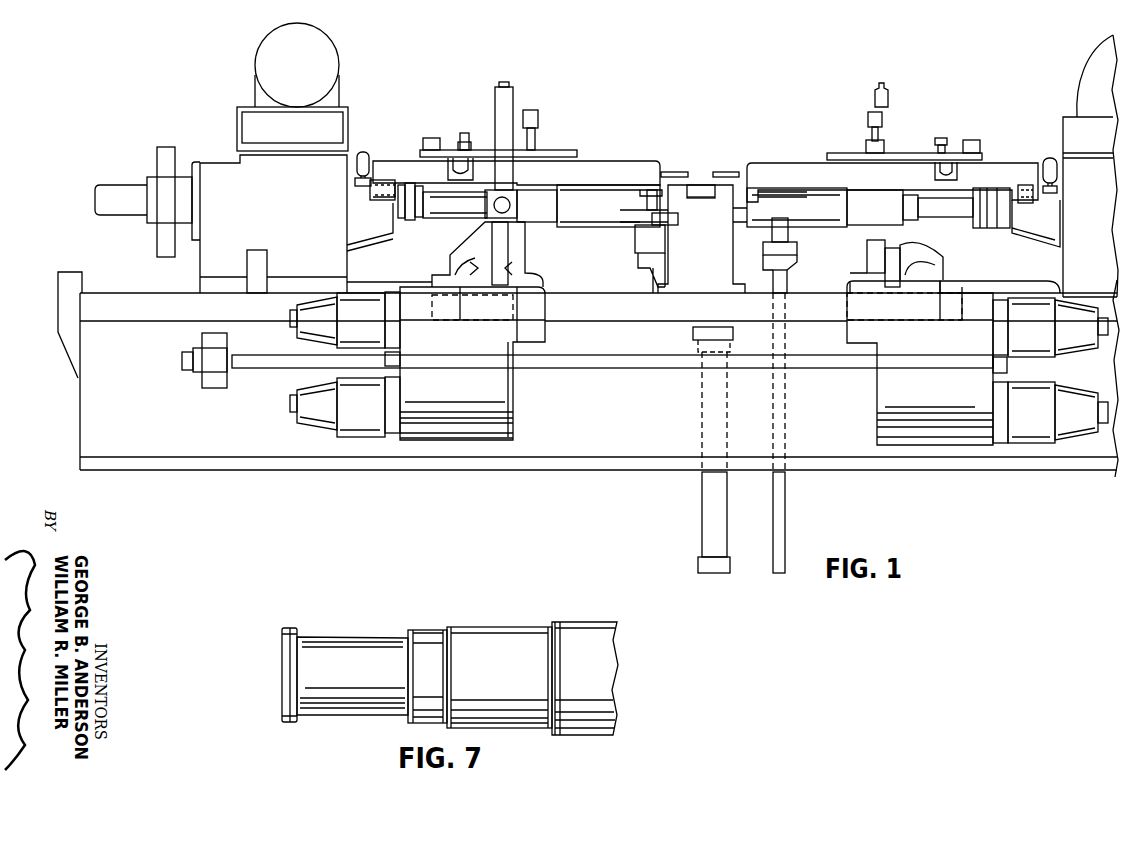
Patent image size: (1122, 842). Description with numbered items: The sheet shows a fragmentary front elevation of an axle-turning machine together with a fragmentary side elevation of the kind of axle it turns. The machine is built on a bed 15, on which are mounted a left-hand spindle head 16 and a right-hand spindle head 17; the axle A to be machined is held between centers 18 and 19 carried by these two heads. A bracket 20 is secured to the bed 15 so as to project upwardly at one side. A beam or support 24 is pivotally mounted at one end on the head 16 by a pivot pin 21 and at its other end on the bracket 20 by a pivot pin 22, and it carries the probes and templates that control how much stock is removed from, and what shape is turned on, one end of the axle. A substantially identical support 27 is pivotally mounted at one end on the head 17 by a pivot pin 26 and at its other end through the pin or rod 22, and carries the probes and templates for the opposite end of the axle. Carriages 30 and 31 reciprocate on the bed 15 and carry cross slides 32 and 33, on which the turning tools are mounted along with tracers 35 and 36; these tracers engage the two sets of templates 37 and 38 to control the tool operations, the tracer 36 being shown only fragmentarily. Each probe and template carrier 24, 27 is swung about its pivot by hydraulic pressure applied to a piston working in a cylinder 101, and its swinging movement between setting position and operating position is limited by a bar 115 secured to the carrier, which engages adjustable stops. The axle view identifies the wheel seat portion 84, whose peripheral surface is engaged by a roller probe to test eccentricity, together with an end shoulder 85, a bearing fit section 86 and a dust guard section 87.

In FIG. 1, the bed 15 is at (873, 465).
In FIG. 1, the left-hand spindle head 16 is at (220, 165).
In FIG. 1, the right-hand spindle head 17 is at (1097, 205).
In FIG. 1, the center 18 is at (432, 218).
In FIG. 1, the center 19 is at (976, 218).
In FIG. 1, the bracket 20 is at (710, 263).
In FIG. 1, the pivot pin 21 is at (387, 195).
In FIG. 1, the pivot pin 22 is at (702, 199).
In FIG. 1, the beam or support 24 is at (615, 168).
In FIG. 1, the pivot pin 26 is at (1022, 204).
In FIG. 1, the support 27 is at (1000, 165).
In FIG. 1, the carriage 30 is at (507, 406).
In FIG. 1, the carriage 31 is at (883, 393).
In FIG. 1, the cross slide 32 is at (520, 254).
In FIG. 1, the cross slide 33 is at (868, 253).
In FIG. 1, the tracer 35 is at (495, 130).
In FIG. 1, the tracer 36 is at (875, 95).
In FIG. 1, the templates 37 is at (545, 142).
In FIG. 1, the templates 38 is at (927, 152).
In FIG. 1, the cylinder 101 is at (362, 157).
In FIG. 1, the bar 115 is at (722, 171).
In FIG. 1, the axle A is at (589, 220).
In FIG. 7, the axle A is at (572, 625).
In FIG. 7, the wheel seat portion 84 is at (492, 628).
In FIG. 7, the end shoulder 85 is at (282, 659).
In FIG. 7, the bearing fit section 86 is at (353, 640).
In FIG. 7, the dust guard section 87 is at (425, 635).